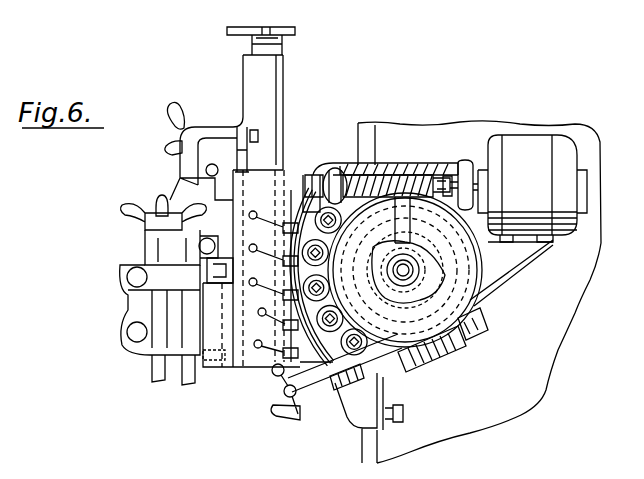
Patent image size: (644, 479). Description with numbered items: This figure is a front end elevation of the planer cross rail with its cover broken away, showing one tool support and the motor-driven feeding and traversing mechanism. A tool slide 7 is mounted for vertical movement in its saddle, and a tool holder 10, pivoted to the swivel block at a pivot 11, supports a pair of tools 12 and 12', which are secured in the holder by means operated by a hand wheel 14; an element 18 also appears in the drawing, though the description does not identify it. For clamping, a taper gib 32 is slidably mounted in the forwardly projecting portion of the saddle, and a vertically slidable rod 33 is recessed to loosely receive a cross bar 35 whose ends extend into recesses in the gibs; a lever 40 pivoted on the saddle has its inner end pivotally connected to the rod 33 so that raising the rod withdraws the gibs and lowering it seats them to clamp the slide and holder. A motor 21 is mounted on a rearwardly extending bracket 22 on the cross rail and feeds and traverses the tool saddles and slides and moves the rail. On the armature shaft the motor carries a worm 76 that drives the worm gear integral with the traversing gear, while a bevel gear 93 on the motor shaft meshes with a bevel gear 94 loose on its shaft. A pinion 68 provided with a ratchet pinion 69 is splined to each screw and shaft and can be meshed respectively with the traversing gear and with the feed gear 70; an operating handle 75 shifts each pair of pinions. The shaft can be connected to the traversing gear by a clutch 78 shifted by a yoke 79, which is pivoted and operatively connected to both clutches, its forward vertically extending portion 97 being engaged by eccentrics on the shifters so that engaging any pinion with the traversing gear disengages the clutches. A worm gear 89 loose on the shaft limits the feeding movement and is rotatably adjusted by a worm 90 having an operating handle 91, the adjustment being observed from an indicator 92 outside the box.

The tool slide 7 is at (276, 87).
The tool holder 10 is at (122, 331).
The pivot 11 is at (145, 250).
The tool 12 is at (134, 368).
The tool 12' is at (170, 388).
The hand wheel 14 is at (124, 210).
The lever 18 is at (170, 108).
The motor 21 is at (578, 159).
The bracket 22 is at (525, 264).
The taper gib 32 is at (207, 272).
The rod 33 is at (238, 146).
The cross bar 35 is at (224, 272).
The lever 40 is at (253, 129).
The pinion 68 is at (405, 270).
The ratchet pinion 69 is at (392, 294).
The feed gear 70 is at (392, 368).
The operating handle 75 is at (258, 344).
The worm 76 is at (400, 175).
The clutch 78 is at (418, 263).
The yoke 79 is at (392, 224).
The worm gear 89 is at (474, 312).
The worm 90 is at (436, 356).
The operating handle 91 is at (282, 412).
The indicator 92 is at (418, 278).
The bevel gear 93 is at (322, 164).
The bevel gear 94 is at (341, 165).
The vertically extending portion 97 is at (270, 220).